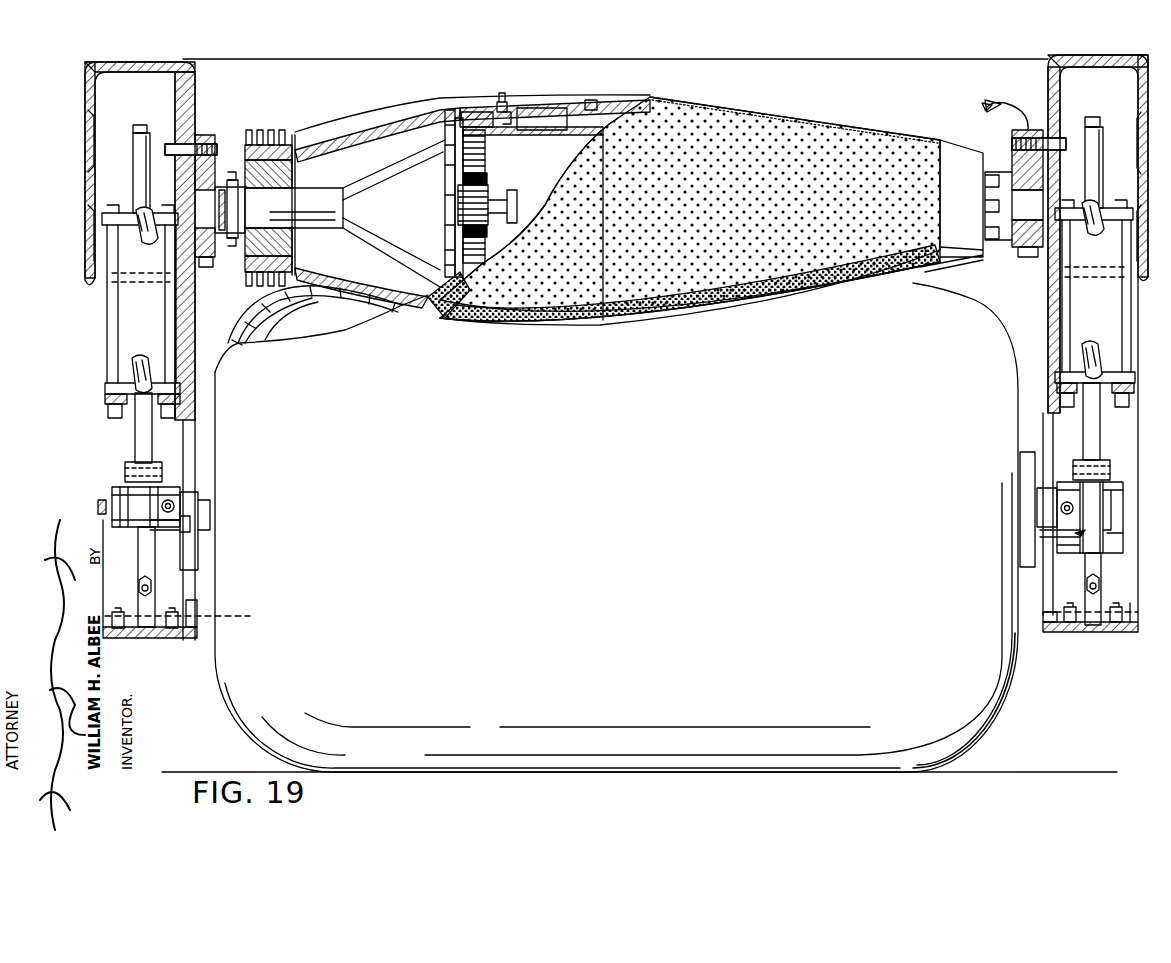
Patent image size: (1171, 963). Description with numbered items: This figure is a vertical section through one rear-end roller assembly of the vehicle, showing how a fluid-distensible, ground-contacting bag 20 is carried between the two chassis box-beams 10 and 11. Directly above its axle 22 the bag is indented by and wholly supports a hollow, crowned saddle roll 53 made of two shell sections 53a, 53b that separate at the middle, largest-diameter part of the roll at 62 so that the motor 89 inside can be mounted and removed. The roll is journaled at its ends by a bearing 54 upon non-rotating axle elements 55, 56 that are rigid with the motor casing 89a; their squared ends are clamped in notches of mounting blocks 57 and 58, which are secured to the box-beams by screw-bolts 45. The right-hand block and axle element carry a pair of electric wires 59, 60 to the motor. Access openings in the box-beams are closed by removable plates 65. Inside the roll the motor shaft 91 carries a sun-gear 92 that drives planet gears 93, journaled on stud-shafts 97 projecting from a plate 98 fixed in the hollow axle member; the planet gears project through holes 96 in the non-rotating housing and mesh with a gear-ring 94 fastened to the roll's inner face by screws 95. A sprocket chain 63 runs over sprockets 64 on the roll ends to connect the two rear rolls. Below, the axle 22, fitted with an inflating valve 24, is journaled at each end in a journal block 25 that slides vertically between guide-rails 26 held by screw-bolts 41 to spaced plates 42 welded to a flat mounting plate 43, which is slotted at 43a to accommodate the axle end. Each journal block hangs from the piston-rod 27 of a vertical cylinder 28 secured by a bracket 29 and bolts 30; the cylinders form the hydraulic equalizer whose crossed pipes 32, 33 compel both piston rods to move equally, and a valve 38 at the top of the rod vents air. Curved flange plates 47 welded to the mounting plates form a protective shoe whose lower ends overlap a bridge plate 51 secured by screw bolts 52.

The box-beam 10 is at (176, 122).
The box-beam 11 is at (1055, 62).
The rear-end roller or bag 20 is at (678, 330).
The axle 22 is at (197, 497).
The inflating valve 24 is at (98, 506).
The journal block 25 is at (150, 526).
The guide-rails 26 is at (150, 564).
The piston-rod 27 is at (136, 176).
The vertical cylinder 28 is at (126, 293).
The bracket 29 is at (180, 402).
The bolts 30 is at (108, 316).
The crossed pipe 32 is at (134, 238).
The crossed pipe 33 is at (128, 367).
The valve 38 is at (138, 124).
The screw-bolts 41 is at (152, 600).
The spaced plates 42 is at (176, 589).
The flat mounting plate 43 is at (188, 366).
The vertical slot 43a is at (190, 428).
The screw-bolts 45 is at (178, 135).
The curved flange plates 47 is at (196, 626).
The bridge plate 51 is at (165, 640).
The screw bolts 52 is at (190, 618).
The saddle roll 53 is at (745, 104).
The shell section 53a is at (428, 300).
The shell section 53b is at (650, 98).
The bearing 54 is at (288, 162).
The axle element 55 is at (302, 226).
The axle element 56 is at (1010, 232).
The mounting block 57 is at (210, 137).
The mounting block 58 is at (1022, 165).
The electric wire 59 is at (990, 100).
The electric wire 60 is at (988, 105).
The separation joint 62 is at (592, 101).
The sprocket chain 63 is at (258, 128).
The sprockets 64 is at (282, 128).
The removable plate 65 is at (86, 140).
The motor 89 is at (540, 196).
The motor casing 89a is at (535, 125).
The motor shaft 91 is at (512, 204).
The sun-gear 92 is at (490, 190).
The planet gears 93 is at (472, 178).
The gear-ring 94 is at (498, 108).
The screws 95 is at (508, 104).
The holes 96 is at (458, 128).
The stud-shafts 97 is at (462, 138).
The plate 98 is at (448, 160).